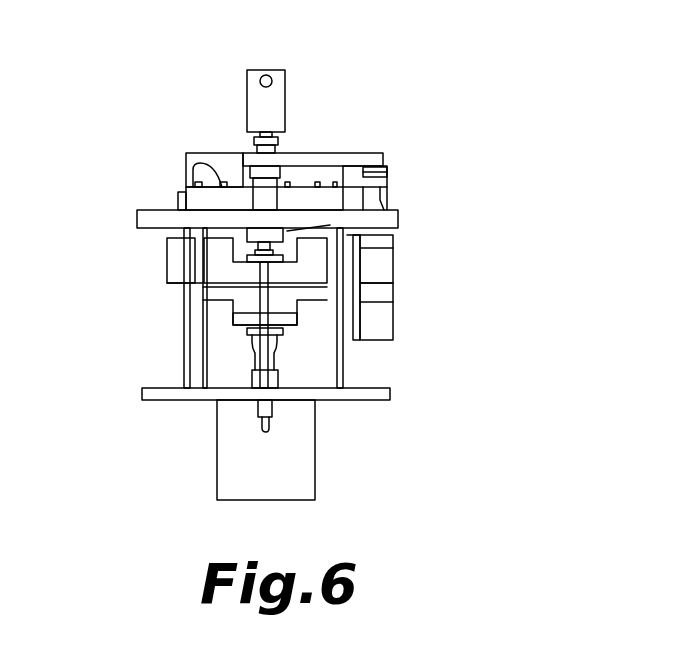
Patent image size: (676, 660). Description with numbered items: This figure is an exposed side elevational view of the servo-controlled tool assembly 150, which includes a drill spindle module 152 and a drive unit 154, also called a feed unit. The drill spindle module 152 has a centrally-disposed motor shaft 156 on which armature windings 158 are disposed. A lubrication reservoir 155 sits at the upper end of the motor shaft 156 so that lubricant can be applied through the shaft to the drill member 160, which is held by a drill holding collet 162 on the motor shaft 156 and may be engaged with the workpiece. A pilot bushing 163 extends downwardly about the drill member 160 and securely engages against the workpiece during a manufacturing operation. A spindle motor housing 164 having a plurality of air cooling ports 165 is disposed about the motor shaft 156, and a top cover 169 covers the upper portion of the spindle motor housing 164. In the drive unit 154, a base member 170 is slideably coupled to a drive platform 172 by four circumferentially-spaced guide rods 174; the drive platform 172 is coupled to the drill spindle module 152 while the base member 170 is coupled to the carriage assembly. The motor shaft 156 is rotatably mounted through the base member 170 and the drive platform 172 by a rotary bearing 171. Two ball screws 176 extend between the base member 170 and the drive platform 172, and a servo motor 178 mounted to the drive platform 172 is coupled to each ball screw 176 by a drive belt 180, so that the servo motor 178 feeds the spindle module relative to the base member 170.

The servo-controlled tool assembly 150 is at (458, 77).
The drill spindle module 152 is at (166, 525).
The drive unit 154 is at (496, 194).
The lubrication reservoir 155 is at (273, 105).
The motor shaft 156 is at (278, 70).
The armature windings 158 is at (245, 257).
The drill member 160 is at (268, 432).
The drill holding collet 162 is at (278, 374).
The pilot bushing 163 is at (217, 472).
The spindle motor housing 164 is at (178, 203).
The air cooling ports 165 is at (200, 185).
The top cover 169 is at (221, 153).
The base member 170 is at (142, 395).
The rotary bearing 171 is at (330, 225).
The drive platform 172 is at (140, 218).
The guide rods 174 is at (190, 360).
The ball screws 176 is at (260, 355).
The servo motor 178 is at (385, 268).
The drive belt 180 is at (318, 162).